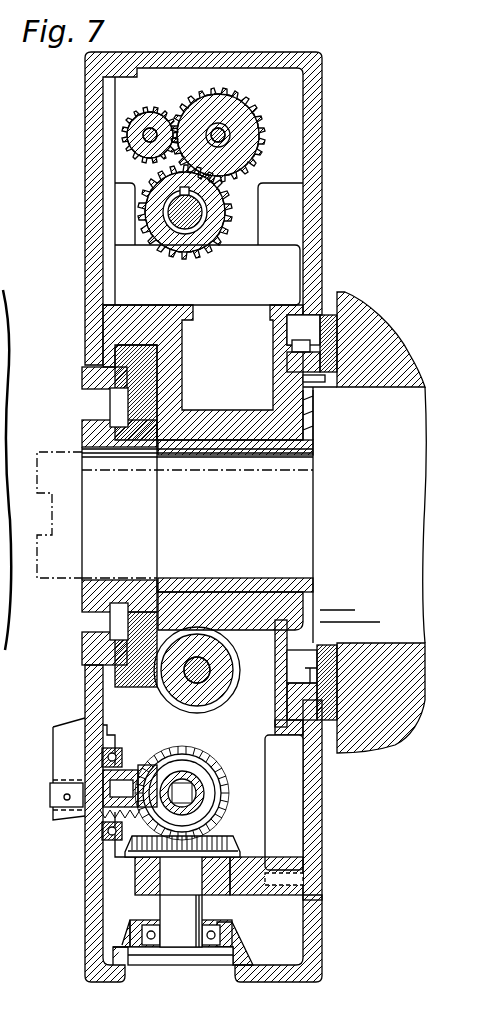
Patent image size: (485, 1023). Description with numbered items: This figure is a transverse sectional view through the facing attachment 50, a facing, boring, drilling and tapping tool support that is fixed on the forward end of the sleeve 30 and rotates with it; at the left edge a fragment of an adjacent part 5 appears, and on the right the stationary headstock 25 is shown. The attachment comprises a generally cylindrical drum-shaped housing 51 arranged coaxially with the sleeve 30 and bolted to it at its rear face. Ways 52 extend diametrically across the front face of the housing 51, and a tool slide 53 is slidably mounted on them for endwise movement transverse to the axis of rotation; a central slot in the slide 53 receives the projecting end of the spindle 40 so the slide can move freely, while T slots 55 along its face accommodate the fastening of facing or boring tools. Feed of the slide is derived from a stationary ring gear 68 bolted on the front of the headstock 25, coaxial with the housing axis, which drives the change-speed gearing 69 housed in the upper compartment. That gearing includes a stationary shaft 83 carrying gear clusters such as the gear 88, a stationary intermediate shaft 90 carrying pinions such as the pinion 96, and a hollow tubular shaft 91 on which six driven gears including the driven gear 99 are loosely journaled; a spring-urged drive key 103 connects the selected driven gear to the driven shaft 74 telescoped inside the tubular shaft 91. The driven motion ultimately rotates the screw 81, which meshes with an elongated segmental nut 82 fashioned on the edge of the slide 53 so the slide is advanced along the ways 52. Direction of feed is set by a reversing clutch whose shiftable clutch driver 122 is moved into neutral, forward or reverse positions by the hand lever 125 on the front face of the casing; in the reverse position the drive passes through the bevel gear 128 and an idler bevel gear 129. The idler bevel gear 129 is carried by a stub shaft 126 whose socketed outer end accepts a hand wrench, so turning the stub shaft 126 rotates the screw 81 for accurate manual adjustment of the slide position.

The adjacent machine part 5 is at (5, 469).
The headstock 25 is at (365, 318).
The sleeve 30 is at (325, 513).
The spindle 40 is at (60, 452).
The facing attachment 50 is at (85, 172).
The housing 51 is at (322, 930).
The ways 52 is at (125, 352).
The tool slide 53 is at (82, 605).
The T slots 55 is at (85, 398).
The ring gear 68 is at (293, 346).
The change-speed gearing 69 is at (272, 108).
The driven shaft 74 is at (165, 242).
The screw 81 is at (188, 712).
The segmental nut 82 is at (195, 678).
The stationary shaft 83 is at (222, 128).
The gear 88 is at (260, 141).
The intermediate shaft 90 is at (150, 128).
The tubular shaft 91 is at (212, 209).
The pinion 96 is at (160, 112).
The driven gear 99 is at (208, 250).
The drive key 103 is at (215, 146).
The clutch driver 122 is at (225, 772).
The hand lever 125 is at (58, 764).
The stub shaft 126 is at (166, 909).
The bevel gear 128 is at (226, 788).
The idler bevel gear 129 is at (232, 842).